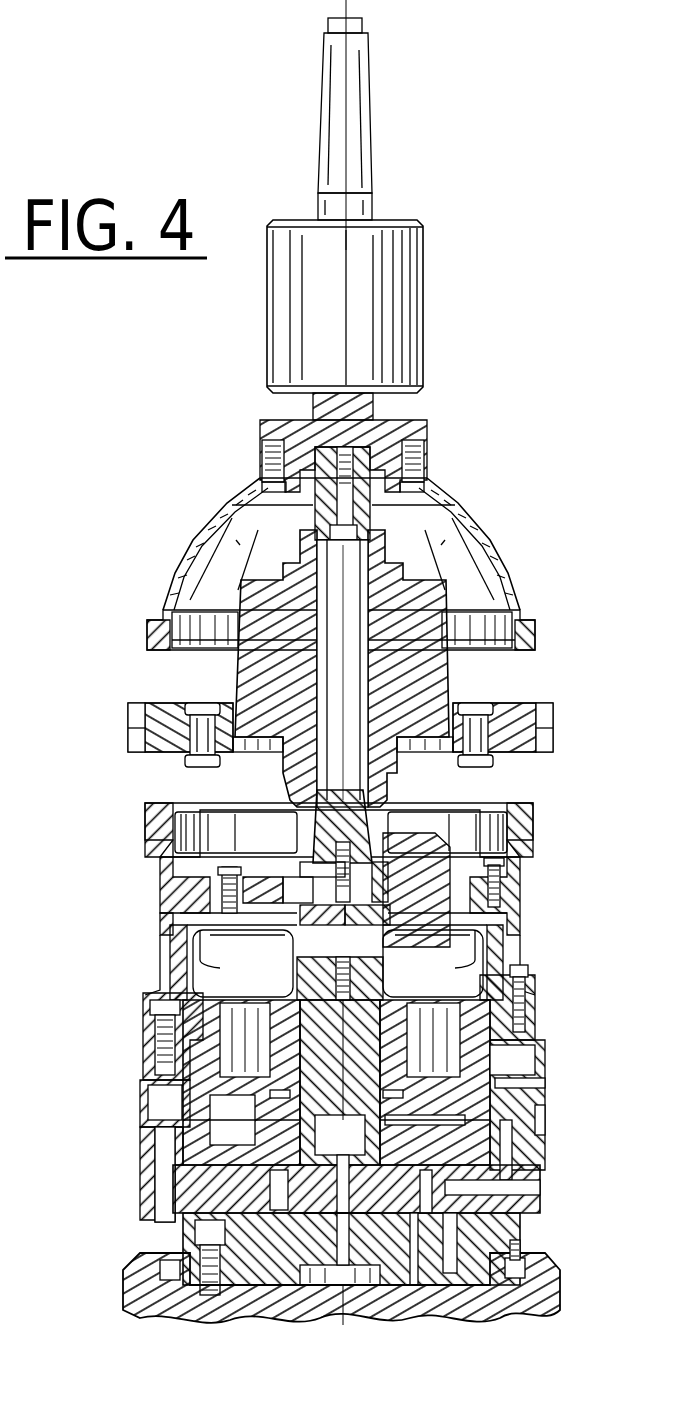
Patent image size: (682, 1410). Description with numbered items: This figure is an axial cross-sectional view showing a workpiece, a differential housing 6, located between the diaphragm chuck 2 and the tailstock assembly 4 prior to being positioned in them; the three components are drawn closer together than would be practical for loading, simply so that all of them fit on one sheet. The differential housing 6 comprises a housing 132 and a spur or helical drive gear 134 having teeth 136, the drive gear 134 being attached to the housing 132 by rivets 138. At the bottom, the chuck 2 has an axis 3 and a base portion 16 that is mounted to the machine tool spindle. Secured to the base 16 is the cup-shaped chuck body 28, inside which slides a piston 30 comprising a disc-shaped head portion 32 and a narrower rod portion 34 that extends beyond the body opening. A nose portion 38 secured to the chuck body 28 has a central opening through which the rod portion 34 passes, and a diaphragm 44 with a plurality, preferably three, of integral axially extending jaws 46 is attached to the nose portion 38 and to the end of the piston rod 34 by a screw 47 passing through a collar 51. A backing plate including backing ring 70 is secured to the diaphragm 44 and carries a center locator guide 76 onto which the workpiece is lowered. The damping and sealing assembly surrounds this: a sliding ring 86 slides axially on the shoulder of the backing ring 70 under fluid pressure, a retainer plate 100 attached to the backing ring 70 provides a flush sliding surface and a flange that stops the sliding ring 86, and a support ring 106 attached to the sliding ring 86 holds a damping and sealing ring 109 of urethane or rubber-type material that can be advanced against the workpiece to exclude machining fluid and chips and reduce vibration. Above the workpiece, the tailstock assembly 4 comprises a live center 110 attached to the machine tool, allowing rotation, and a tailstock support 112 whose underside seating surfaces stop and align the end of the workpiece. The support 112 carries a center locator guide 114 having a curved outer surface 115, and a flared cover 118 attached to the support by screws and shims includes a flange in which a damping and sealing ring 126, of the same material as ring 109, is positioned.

The diaphragm chuck 2 is at (565, 1010).
The axis 3 is at (299, 1305).
The tailstock assembly 4 is at (225, 455).
The differential housing 6 is at (488, 683).
The base portion 16 is at (440, 1278).
The chuck body 28 is at (148, 1185).
The piston 30 is at (347, 1148).
The head portion 32 is at (170, 1145).
The rod portion 34 is at (297, 980).
The nose portion 38 is at (525, 1082).
The diaphragm 44 is at (533, 1021).
The jaws 46 is at (432, 878).
The screw 47 is at (265, 947).
The collar 51 is at (385, 950).
The backing ring 70 is at (505, 930).
The center locator guide 76 is at (383, 807).
The sliding ring 86 is at (510, 893).
The retainer plate 100 is at (262, 882).
The support ring 106 is at (163, 860).
The damping and sealing ring 109 is at (160, 823).
The live center 110 is at (423, 305).
The tailstock support 112 is at (412, 416).
The center locator guide 114 is at (305, 506).
The curved outer surface 115 is at (378, 506).
The flared cover 118 is at (462, 500).
The damping and sealing ring 126 is at (535, 636).
The housing 132 is at (238, 666).
The drive gear 134 is at (130, 713).
The teeth 136 is at (130, 742).
The rivets 138 is at (190, 707).